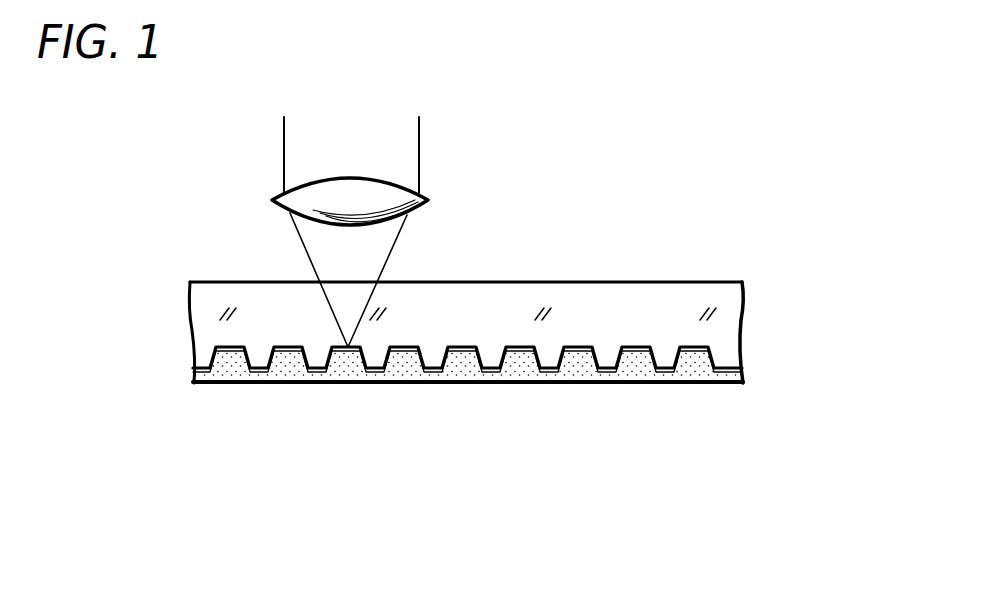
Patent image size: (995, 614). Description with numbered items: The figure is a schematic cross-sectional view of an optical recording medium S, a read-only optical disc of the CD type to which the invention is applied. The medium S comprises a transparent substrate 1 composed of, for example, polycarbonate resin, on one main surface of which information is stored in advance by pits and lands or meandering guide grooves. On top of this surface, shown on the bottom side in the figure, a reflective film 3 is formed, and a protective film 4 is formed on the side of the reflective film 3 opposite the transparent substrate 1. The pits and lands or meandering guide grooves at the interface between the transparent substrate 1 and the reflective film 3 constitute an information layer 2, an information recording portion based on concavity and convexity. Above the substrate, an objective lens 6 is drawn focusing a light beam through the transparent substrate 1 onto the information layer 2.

The transparent substrate 1 is at (580, 282).
The information layer 2 is at (512, 350).
The reflective film 3 is at (348, 347).
The protective film 4 is at (468, 423).
The objective lens 6 is at (368, 195).
The optical recording medium S is at (538, 334).